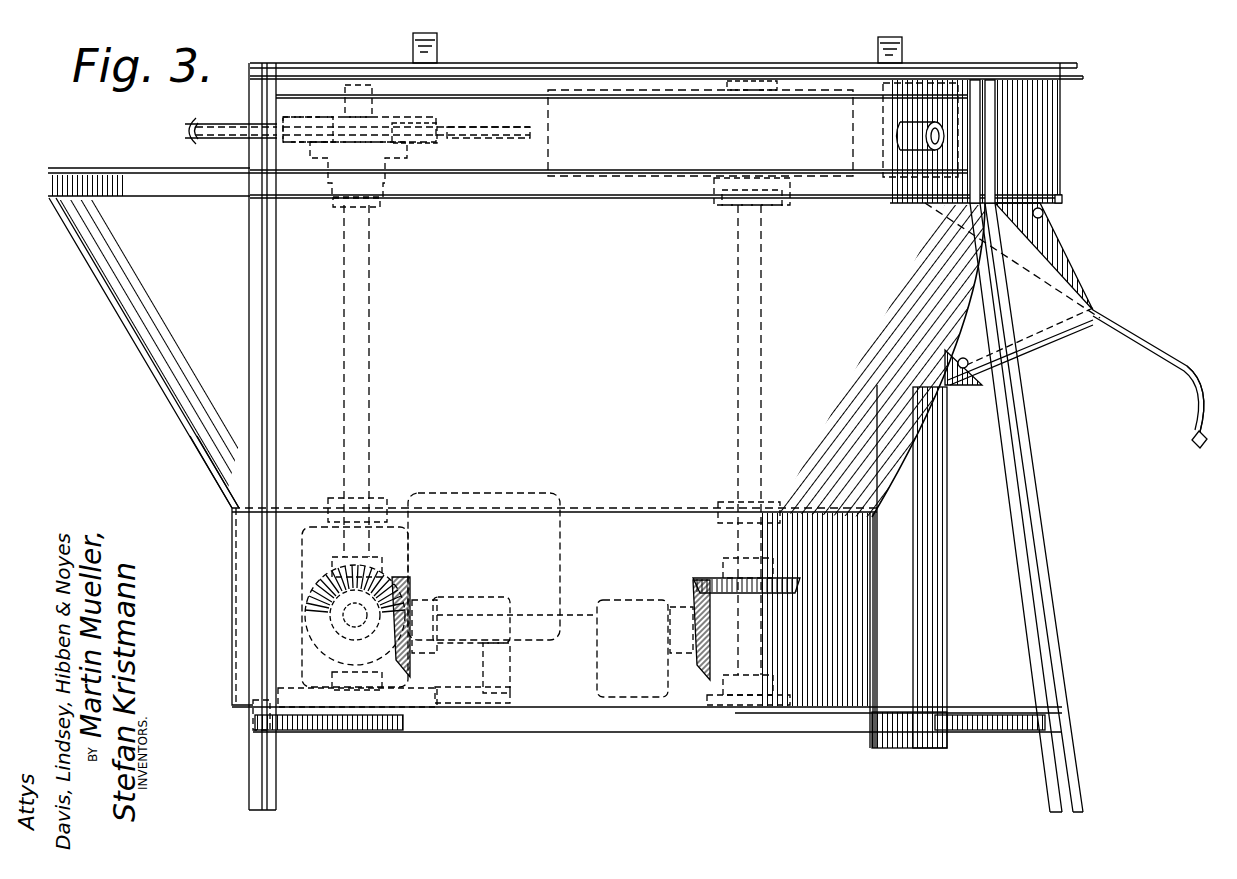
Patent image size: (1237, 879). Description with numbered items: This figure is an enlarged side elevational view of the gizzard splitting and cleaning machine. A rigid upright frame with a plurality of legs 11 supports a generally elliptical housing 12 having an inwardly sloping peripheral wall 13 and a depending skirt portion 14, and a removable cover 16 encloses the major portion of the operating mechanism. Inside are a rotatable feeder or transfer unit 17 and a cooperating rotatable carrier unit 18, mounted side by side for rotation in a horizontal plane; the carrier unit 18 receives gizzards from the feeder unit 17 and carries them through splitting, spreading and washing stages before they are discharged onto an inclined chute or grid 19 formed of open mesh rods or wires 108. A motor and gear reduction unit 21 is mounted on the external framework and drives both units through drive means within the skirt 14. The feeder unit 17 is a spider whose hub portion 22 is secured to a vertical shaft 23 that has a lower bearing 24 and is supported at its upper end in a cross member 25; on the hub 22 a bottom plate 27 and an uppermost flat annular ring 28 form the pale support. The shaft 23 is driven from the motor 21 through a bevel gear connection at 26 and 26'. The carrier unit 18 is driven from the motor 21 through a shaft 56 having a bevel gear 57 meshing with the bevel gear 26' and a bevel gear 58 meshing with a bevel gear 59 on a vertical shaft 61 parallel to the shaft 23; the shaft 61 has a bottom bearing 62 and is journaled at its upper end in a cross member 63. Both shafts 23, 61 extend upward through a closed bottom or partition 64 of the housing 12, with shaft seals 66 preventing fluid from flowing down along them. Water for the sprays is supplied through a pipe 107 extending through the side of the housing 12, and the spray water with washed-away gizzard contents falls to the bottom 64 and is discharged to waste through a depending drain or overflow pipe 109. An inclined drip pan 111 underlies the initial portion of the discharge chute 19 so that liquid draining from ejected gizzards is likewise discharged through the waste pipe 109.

The legs 11 is at (270, 774).
The housing 12 is at (126, 347).
The peripheral wall 13 is at (212, 478).
The skirt portion 14 is at (232, 551).
The cover 16 is at (311, 63).
The feeder or transfer unit 17 is at (480, 100).
The carrier unit 18 is at (680, 82).
The discharge chute 19 is at (1188, 356).
The motor and gear reduction unit 21 is at (462, 488).
The hub portion 22 is at (398, 178).
The vertical shaft 23 is at (372, 372).
The lower bearing 24 is at (414, 696).
The cross member 25 is at (333, 206).
The bevel gear 26 is at (337, 611).
The bevel gear 26' is at (355, 607).
The bottom plate 27 is at (440, 146).
The flat annular ring 28 is at (406, 118).
The shaft 56 is at (574, 612).
The bevel gear 57 is at (412, 595).
The bevel gear 58 is at (692, 582).
The bevel gear 59 is at (797, 587).
The vertical shaft 61 is at (764, 463).
The bottom bearing 62 is at (775, 690).
The cross member 63 is at (766, 80).
The closed bottom or partition 64 is at (622, 505).
The shaft seals 66 is at (386, 497).
The pipe 107 is at (915, 124).
The open mesh rods or wires 108 is at (1196, 386).
The drain or overflow pipe 109 is at (947, 634).
The drip pan 111 is at (1050, 348).